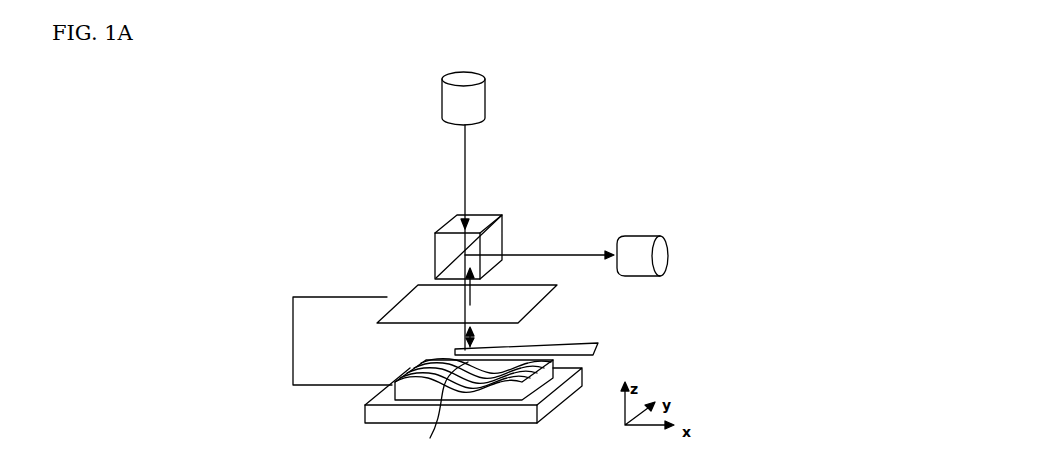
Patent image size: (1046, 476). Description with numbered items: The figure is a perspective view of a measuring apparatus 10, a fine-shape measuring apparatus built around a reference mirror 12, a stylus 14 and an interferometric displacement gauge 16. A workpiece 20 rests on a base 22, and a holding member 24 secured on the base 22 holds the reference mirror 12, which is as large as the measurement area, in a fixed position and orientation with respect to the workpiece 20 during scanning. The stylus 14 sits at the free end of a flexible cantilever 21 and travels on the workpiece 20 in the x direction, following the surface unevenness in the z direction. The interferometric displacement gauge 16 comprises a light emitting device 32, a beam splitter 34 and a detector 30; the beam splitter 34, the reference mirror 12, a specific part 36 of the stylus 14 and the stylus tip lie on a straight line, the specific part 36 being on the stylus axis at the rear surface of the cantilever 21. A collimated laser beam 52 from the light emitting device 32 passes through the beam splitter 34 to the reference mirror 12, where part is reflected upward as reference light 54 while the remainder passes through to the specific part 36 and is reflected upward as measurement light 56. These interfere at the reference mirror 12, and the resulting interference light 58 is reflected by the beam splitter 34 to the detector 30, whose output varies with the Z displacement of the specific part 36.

The measuring apparatus 10 is at (653, 174).
The reference mirror 12 is at (378, 313).
The stylus 14 is at (433, 407).
The interferometric displacement gauge 16 is at (543, 198).
The workpiece 20 is at (415, 373).
The cantilever 21 is at (603, 348).
The base 22 is at (365, 417).
The holding member 24 is at (293, 348).
The detector 30 is at (668, 252).
The light emitting device 32 is at (480, 99).
The beam splitter 34 is at (435, 258).
The specific part 36 is at (456, 345).
The laser beam 52 is at (466, 161).
The reference light 54 is at (482, 278).
The measurement light 56 is at (474, 339).
The interference light 58 is at (543, 253).